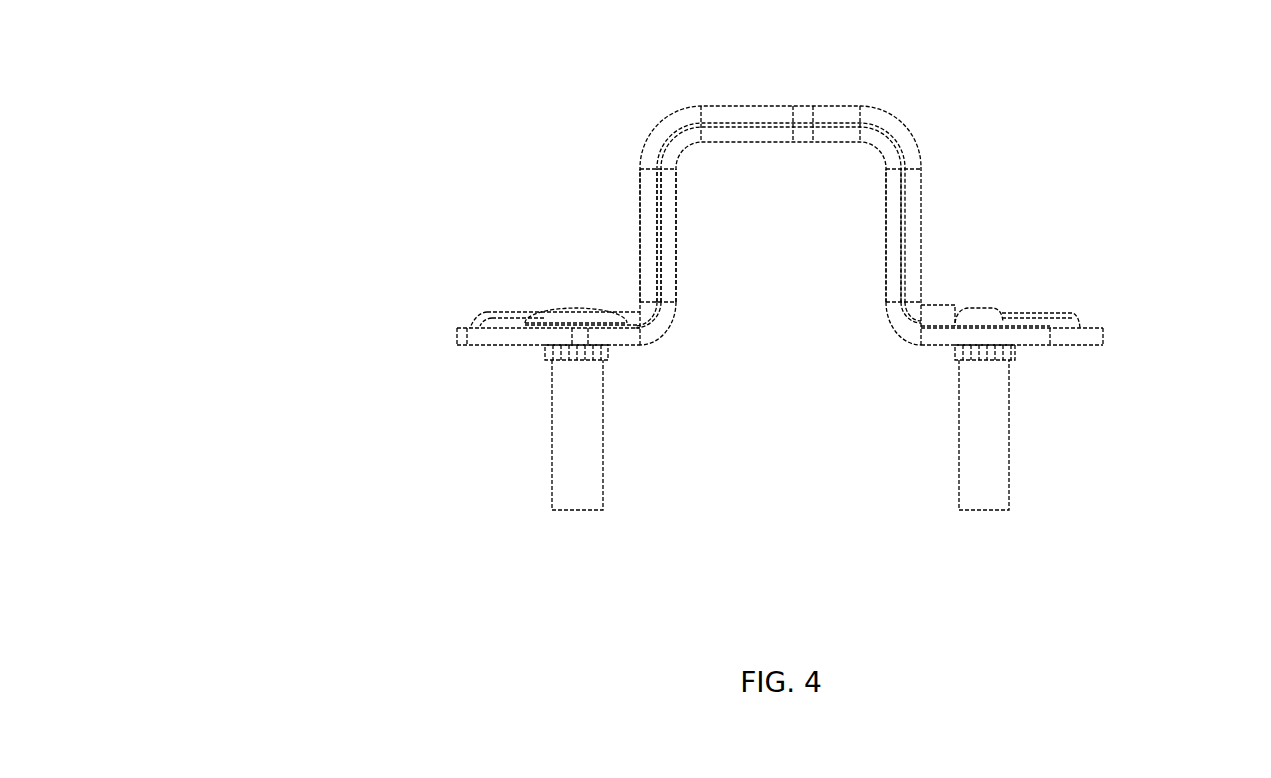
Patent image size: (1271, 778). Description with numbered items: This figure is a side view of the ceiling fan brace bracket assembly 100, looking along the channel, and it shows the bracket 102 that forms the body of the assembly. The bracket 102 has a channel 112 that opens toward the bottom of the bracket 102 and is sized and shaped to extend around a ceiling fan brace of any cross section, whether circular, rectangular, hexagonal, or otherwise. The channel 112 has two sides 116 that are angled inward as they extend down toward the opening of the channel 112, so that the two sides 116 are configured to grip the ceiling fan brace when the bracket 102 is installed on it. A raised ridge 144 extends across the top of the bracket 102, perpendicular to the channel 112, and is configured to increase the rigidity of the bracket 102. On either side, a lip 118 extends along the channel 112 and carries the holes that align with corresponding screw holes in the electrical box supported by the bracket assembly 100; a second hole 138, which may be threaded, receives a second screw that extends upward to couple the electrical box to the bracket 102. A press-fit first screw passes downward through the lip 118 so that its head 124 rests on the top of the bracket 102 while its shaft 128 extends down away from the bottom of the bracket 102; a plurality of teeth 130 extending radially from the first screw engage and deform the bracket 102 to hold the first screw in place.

The bracket assembly 100 is at (388, 171).
The bracket 102 is at (757, 131).
The channel 112 is at (835, 172).
The raised ridge 144 is at (649, 215).
The sides 116 is at (890, 235).
The lip 118 is at (488, 337).
The second hole 138 is at (488, 318).
The head 124 is at (580, 315).
The teeth 130 is at (563, 352).
The shaft 128 is at (572, 453).